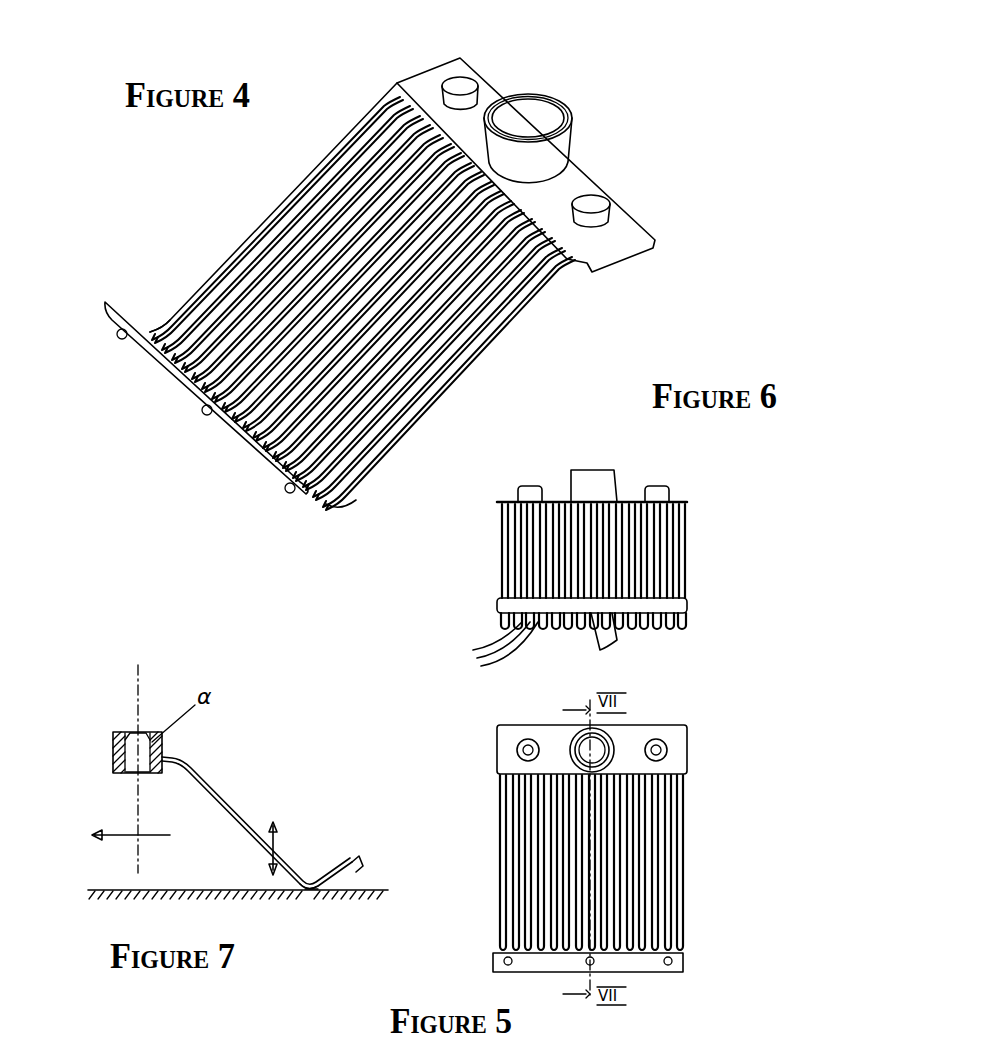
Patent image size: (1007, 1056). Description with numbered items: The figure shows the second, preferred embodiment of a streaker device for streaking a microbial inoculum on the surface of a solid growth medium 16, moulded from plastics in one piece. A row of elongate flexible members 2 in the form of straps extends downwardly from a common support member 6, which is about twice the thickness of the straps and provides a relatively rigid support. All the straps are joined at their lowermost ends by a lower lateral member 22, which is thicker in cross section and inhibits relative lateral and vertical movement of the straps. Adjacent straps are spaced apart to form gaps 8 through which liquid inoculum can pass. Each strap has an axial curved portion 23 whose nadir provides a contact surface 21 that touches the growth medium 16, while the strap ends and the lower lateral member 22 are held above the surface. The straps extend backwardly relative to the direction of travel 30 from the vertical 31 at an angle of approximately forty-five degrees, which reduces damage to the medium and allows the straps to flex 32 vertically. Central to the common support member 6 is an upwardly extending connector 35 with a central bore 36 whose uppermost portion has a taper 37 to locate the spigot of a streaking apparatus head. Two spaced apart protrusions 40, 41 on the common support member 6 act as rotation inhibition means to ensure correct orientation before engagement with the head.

In FIG. 4, the elongate flexible members 2 is at (300, 230).
In FIG. 6, the elongate flexible members 2 is at (528, 556).
In FIG. 5, the elongate flexible members 2 is at (670, 835).
In FIG. 7, the elongate flexible members 2 is at (238, 822).
In FIG. 4, the common support member 6 is at (629, 238).
In FIG. 6, the common support member 6 is at (687, 508).
In FIG. 5, the common support member 6 is at (660, 728).
In FIG. 6, the gaps 8 is at (494, 647).
In FIG. 5, the gaps 8 is at (672, 918).
In FIG. 7, the solid growth medium 16 is at (373, 890).
In FIG. 4, the contact surfaces 21 is at (347, 499).
In FIG. 6, the contact surfaces 21 is at (602, 630).
In FIG. 7, the contact surfaces 21 is at (316, 893).
In FIG. 4, the lower lateral member 22 is at (298, 490).
In FIG. 6, the lower lateral member 22 is at (498, 603).
In FIG. 5, the lower lateral member 22 is at (497, 963).
In FIG. 7, the lower lateral member 22 is at (356, 860).
In FIG. 4, the axial curved portion 23 is at (165, 318).
In FIG. 7, the axial curved portion 23 is at (302, 884).
In FIG. 7, the direction of travel 30 is at (165, 837).
In FIG. 7, the vertical 31 is at (138, 672).
In FIG. 7, the vertical flex 32 is at (276, 836).
In FIG. 4, the connector 35 is at (548, 147).
In FIG. 6, the connector 35 is at (602, 485).
In FIG. 5, the connector 35 is at (572, 748).
In FIG. 7, the connector 35 is at (120, 751).
In FIG. 4, the central bore 36 is at (532, 113).
In FIG. 5, the central bore 36 is at (588, 745).
In FIG. 7, the central bore 36 is at (132, 766).
In FIG. 4, the taper 37 is at (527, 97).
In FIG. 7, the taper 37 is at (130, 728).
In FIG. 4, the protrusion 40 is at (458, 90).
In FIG. 5, the protrusion 40 is at (522, 755).
In FIG. 4, the protrusion 41 is at (592, 203).
In FIG. 5, the protrusion 41 is at (660, 750).